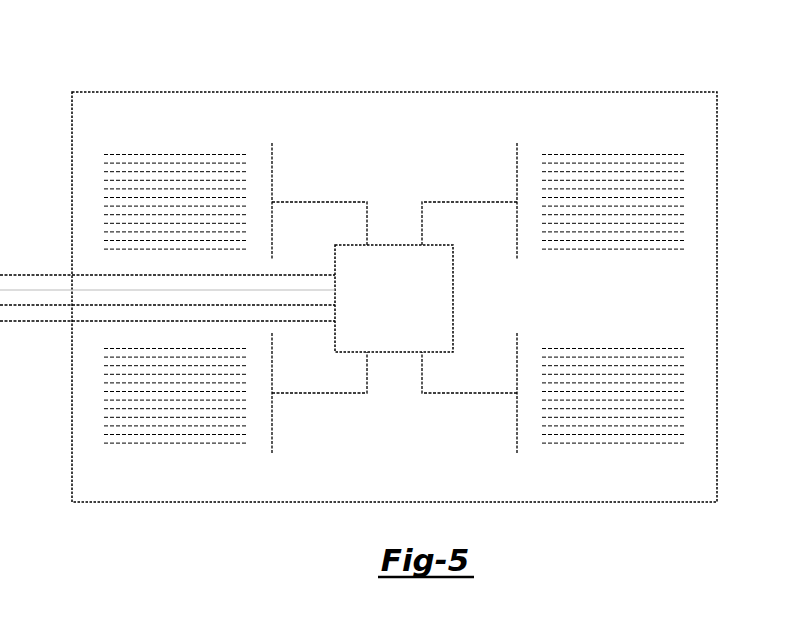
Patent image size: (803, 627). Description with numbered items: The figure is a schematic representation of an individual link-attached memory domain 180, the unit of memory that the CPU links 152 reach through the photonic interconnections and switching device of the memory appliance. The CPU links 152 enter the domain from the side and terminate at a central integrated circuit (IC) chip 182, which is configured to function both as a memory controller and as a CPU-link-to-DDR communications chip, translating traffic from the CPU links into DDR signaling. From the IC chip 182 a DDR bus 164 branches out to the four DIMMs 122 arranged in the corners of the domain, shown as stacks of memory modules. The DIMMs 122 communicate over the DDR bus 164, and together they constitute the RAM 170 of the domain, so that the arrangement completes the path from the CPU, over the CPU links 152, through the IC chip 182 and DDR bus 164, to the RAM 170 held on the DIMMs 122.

The DIMMs 122 is at (131, 153).
The CPU links 152 is at (20, 322).
The DDR bus 164 is at (320, 201).
The RAM 170 is at (174, 458).
The link-attached memory domain 180 is at (236, 506).
The integrated circuit (IC) chip 182 is at (407, 303).